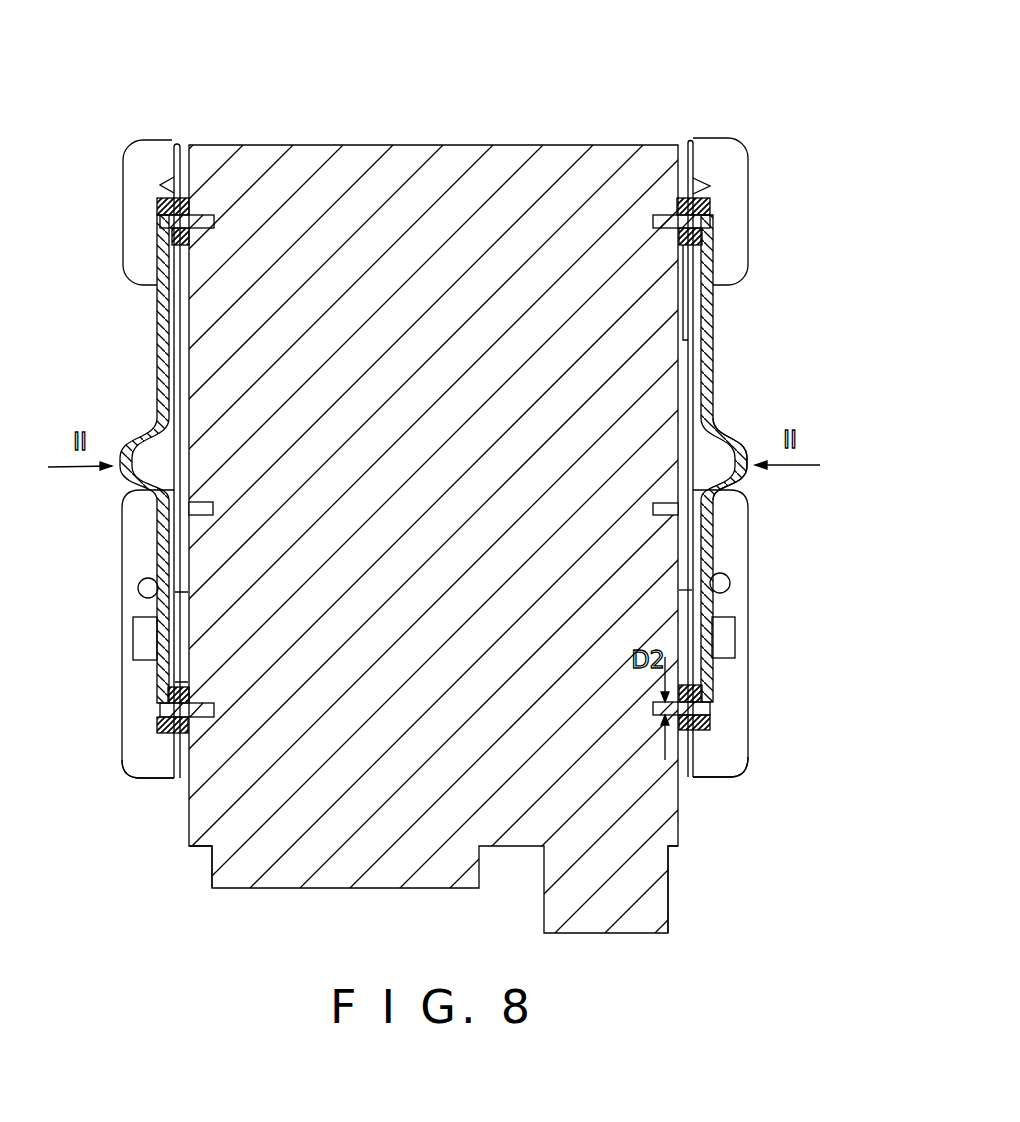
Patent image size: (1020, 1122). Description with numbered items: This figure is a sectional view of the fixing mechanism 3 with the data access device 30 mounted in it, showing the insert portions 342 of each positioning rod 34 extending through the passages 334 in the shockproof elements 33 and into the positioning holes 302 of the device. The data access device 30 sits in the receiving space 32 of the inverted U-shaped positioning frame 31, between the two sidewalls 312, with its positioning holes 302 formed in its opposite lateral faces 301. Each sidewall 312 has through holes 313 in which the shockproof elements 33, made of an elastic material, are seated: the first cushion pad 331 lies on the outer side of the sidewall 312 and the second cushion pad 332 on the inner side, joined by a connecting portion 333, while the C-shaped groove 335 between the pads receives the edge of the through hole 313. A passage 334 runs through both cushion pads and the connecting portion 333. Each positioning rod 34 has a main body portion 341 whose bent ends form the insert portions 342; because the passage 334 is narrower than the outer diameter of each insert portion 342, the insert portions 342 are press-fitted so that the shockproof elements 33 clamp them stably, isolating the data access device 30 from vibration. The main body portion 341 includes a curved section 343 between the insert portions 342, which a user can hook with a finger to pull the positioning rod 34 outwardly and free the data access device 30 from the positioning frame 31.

The fixing mechanism 3 is at (728, 115).
The data access device 30 is at (405, 217).
The lateral face 301 is at (192, 807).
The positioning hole 302 is at (212, 215).
The positioning frame 31 is at (713, 800).
The sidewall 312 is at (178, 757).
The through hole 313 is at (692, 258).
The receiving space 32 is at (179, 151).
The shockproof element 33 is at (448, 440).
The first cushion pad 331 is at (710, 203).
The second cushion pad 332 is at (683, 195).
The connecting portion 333 is at (695, 197).
The passage 334 is at (712, 218).
The C-shaped groove 335 is at (712, 722).
The positioning rod 34 is at (453, 459).
The main body portion 341 is at (703, 372).
The insert portion 342 is at (712, 223).
The curved section 343 is at (742, 470).